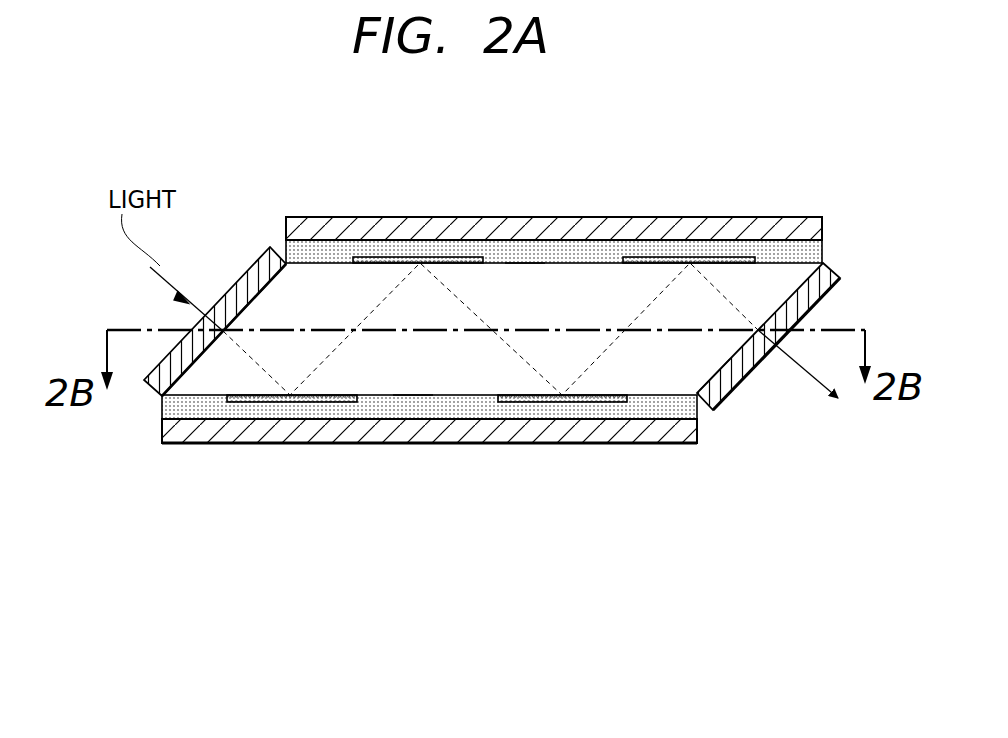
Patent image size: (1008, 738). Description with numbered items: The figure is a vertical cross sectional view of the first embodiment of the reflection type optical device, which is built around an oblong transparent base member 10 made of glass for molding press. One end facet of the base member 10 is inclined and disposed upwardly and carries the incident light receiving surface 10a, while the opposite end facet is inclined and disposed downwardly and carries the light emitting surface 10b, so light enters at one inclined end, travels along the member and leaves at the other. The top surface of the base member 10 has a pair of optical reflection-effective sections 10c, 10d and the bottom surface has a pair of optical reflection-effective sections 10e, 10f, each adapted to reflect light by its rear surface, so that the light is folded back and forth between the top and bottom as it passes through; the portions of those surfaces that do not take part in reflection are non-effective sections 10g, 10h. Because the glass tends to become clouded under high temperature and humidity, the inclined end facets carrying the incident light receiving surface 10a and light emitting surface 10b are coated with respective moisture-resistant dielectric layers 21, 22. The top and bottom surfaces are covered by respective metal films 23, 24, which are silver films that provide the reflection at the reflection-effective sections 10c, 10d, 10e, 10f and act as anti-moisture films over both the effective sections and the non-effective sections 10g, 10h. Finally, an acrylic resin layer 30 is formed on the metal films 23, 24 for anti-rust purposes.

The transparent base member 10 is at (574, 288).
The incident light receiving surface 10a is at (257, 307).
The light emitting surface 10b is at (704, 371).
The optical reflection-effective section 10c is at (390, 263).
The optical reflection-effective section 10d is at (640, 263).
The optical reflection-effective section 10e is at (267, 395).
The optical reflection-effective section 10f is at (588, 395).
The non-effective section 10g is at (515, 263).
The non-effective section 10h is at (403, 395).
The moisture-resistant dielectric layer 21 is at (260, 263).
The moisture-resistant dielectric layer 22 is at (832, 270).
The metal film 23 is at (790, 250).
The metal film 24 is at (672, 410).
The acrylic resin layer 30 is at (729, 217).